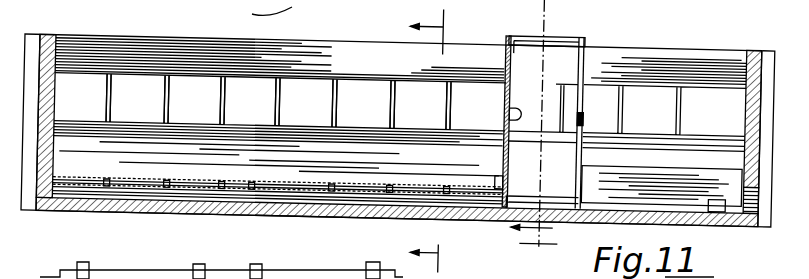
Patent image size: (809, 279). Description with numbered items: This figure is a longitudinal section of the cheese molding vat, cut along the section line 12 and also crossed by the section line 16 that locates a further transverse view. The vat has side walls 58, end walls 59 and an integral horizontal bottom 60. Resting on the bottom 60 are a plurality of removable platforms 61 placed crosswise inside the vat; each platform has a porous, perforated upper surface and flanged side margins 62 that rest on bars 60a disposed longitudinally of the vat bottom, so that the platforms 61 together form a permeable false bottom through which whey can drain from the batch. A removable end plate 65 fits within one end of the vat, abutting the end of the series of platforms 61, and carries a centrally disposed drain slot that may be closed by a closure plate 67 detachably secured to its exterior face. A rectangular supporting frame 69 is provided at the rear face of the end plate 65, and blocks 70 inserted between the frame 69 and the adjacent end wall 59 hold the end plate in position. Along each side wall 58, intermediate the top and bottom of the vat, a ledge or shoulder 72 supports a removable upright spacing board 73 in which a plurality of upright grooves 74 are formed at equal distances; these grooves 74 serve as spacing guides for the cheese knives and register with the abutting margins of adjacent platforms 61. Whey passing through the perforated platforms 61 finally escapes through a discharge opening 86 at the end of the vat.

The section line 12- 12 is at (536, 128).
The section line 16- 16 is at (442, 141).
The side wall 58 is at (648, 46).
The end wall 59 is at (742, 122).
The horizontal bottom 60 is at (205, 193).
The bar 60a is at (102, 188).
The removable platform 61 is at (253, 177).
The flanged side margin 62 is at (340, 183).
The removable end plate 65 is at (503, 54).
The closure plate 67 is at (508, 92).
The rectangular supporting frame 69 is at (557, 29).
The block 70 is at (715, 176).
The ledge or shoulder 72 is at (370, 116).
The spacing board 73 is at (303, 90).
The upright groove 74 is at (445, 84).
The discharge opening 86 is at (727, 181).